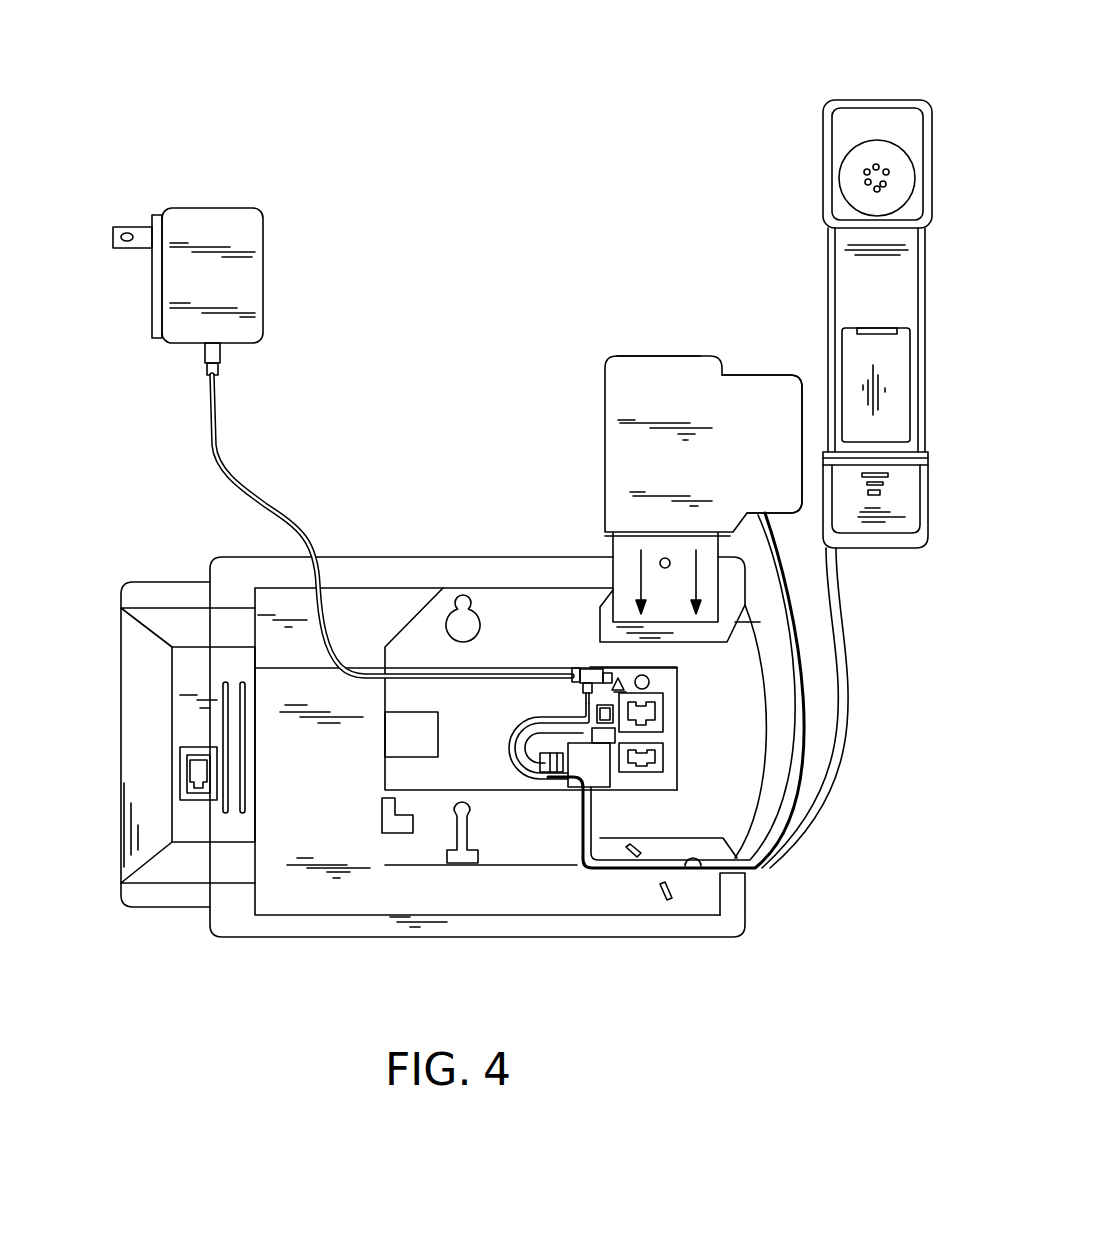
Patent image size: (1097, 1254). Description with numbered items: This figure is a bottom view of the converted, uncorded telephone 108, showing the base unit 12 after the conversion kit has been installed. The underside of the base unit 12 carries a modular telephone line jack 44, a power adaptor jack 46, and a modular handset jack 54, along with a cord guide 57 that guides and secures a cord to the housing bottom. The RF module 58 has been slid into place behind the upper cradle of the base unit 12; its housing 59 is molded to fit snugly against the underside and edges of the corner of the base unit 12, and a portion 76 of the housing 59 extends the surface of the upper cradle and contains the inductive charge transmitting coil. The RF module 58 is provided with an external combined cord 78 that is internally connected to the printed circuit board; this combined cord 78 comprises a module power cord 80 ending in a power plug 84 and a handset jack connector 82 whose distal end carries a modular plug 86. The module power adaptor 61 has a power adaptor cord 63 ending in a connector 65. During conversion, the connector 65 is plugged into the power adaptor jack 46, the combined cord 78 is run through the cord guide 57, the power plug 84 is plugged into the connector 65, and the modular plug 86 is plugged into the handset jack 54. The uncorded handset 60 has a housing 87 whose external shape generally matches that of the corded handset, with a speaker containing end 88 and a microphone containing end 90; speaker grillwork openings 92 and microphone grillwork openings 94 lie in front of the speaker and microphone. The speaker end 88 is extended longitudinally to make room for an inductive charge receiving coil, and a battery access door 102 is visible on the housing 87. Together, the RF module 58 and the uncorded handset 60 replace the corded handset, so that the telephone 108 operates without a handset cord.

The uncorded telephone 108 is at (486, 152).
The speaker containing end 88 is at (878, 100).
The speaker grillwork openings 92 is at (867, 172).
The uncorded handset 60 is at (803, 181).
The module power adaptor 61 is at (248, 275).
The housing 87 is at (865, 298).
The battery access door 102 is at (862, 355).
The portion of the RF module housing 76 is at (630, 356).
The housing 59 is at (680, 356).
The RF module 58 is at (605, 418).
The power adaptor cord 63 is at (253, 487).
The base unit 12 is at (362, 538).
The connector 65 is at (576, 668).
The microphone grillwork openings 94 is at (865, 490).
The microphone containing end 90 is at (884, 548).
The power adaptor jack 46 is at (650, 682).
The external combined cord 78 is at (843, 692).
The power plug 84 is at (583, 695).
The handset jack connector 82 is at (530, 740).
The modular telephone line jack 44 is at (650, 713).
The modular handset jack 54 is at (662, 768).
The module power cord 80 is at (522, 795).
The modular plug 86 is at (600, 745).
The cord guide 57 is at (643, 873).